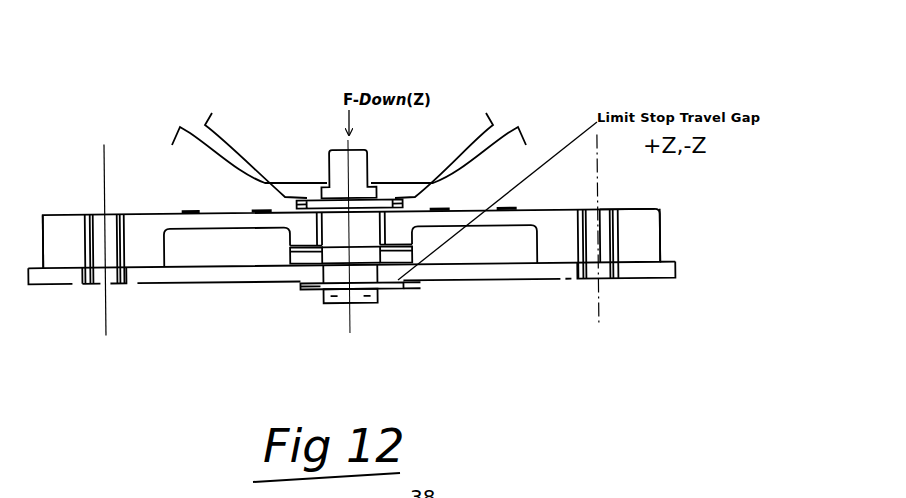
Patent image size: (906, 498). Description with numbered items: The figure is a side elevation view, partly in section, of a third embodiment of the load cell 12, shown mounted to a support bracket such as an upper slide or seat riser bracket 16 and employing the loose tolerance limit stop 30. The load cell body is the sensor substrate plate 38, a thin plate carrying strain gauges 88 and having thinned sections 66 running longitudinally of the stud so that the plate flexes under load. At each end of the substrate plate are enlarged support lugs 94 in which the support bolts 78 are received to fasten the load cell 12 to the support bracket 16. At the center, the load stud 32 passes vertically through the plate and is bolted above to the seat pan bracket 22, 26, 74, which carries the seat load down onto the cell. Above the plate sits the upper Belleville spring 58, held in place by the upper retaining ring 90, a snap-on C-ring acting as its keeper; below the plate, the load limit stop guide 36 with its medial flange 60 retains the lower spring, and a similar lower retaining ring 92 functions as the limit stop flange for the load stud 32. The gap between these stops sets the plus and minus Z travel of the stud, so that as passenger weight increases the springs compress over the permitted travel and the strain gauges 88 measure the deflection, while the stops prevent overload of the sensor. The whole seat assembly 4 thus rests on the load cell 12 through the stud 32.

The seat weight sensor assembly 4 is at (52, 248).
The load cell 12 is at (625, 187).
The upper rail 16 is at (467, 273).
The seat pan mounting plate 22 is at (315, 103).
The bracket 26 is at (315, 103).
The load spreader 74 is at (212, 130).
The loose tolerance overload limit stop assembly 30 is at (402, 310).
The load stud 32 is at (335, 300).
The load limit stop guide 36 is at (333, 260).
The sensor substrate plate 38 is at (168, 222).
The upper Belleville spring 58 is at (405, 203).
The medial flange 60 is at (297, 251).
The thinned sections 66 is at (207, 236).
The crash stop flange bolts 78 is at (93, 282).
The strain gauges 88 is at (513, 205).
The upper retaining ring 90 is at (307, 197).
The lower retaining ring 92 is at (308, 290).
The enlarged support lugs 94 is at (642, 233).